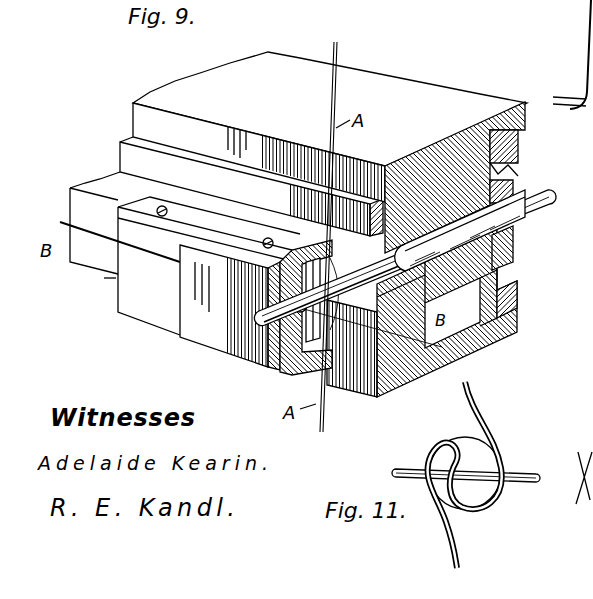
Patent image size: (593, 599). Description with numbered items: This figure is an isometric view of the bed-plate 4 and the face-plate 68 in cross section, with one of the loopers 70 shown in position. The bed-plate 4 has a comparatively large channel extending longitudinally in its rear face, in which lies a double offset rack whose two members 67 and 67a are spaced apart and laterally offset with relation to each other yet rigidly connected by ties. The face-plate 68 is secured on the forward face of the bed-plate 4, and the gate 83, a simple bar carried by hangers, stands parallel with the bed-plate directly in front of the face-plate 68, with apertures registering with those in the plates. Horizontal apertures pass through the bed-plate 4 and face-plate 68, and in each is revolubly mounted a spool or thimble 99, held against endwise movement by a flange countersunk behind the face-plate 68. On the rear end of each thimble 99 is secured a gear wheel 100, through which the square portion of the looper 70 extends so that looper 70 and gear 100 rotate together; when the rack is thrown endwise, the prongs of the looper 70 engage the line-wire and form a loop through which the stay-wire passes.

In FIG. 9, the bed-plate 4 is at (296, 299).
In FIG. 9, the face-plate 68 is at (199, 160).
In FIG. 9, the gate 83 is at (209, 266).
In FIG. 9, the rack member 67a is at (518, 161).
In FIG. 9, the spool or thimble 99 is at (439, 233).
In FIG. 9, the gear wheel 100 is at (504, 262).
In FIG. 9, the rack member 67 is at (518, 300).
In FIG. 9, the looper or loop former 70 is at (526, 226).
In FIG. 11, the looper or loop former 70 is at (486, 456).